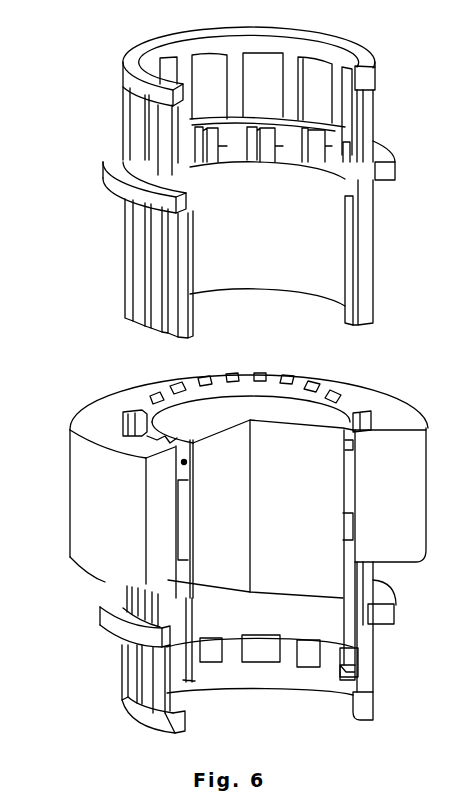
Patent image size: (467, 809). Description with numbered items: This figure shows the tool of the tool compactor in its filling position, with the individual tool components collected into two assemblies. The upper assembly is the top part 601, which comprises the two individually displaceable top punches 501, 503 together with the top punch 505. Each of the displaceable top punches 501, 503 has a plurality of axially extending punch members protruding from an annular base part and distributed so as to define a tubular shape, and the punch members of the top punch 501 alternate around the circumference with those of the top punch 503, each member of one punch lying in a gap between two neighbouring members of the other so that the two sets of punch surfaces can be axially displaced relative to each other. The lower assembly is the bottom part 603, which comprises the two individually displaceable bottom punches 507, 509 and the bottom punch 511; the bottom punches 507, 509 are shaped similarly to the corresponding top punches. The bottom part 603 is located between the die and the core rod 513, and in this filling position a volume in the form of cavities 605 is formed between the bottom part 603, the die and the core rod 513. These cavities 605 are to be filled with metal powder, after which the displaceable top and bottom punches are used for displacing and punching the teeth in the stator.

The top part 601 is at (390, 98).
The top punch 501 is at (127, 107).
The top punch 503 is at (125, 231).
The top punch 505 is at (345, 257).
The bottom part 603 is at (378, 668).
The core rod 513 is at (315, 468).
The cavities 605 is at (186, 460).
The bottom punch 507 is at (118, 603).
The bottom punch 509 is at (153, 667).
The bottom punch 511 is at (347, 630).